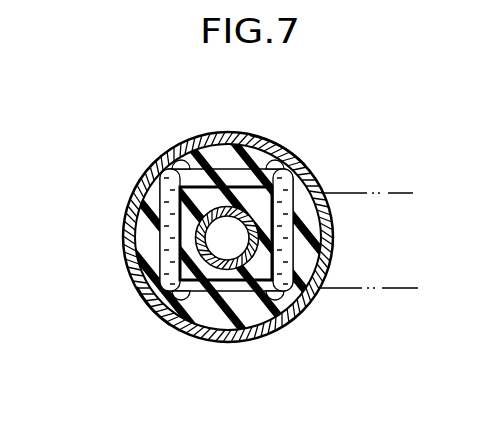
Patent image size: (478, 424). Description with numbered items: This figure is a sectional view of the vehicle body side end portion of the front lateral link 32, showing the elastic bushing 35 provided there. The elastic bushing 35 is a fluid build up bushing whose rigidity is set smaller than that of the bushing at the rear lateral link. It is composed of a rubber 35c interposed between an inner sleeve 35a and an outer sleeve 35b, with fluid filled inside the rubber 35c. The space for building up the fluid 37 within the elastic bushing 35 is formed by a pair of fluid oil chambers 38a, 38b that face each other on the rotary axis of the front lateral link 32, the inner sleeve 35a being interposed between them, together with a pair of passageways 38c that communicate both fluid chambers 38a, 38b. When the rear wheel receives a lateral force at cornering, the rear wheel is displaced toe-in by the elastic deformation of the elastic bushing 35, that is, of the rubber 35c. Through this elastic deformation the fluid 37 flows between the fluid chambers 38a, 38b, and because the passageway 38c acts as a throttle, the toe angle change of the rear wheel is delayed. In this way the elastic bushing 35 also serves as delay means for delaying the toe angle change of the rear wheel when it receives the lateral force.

The front lateral link 32 is at (388, 191).
The elastic bushing 35 is at (118, 107).
The inner sleeve 35a is at (137, 287).
The outer sleeve 35b is at (280, 145).
The rubber 35c is at (232, 160).
The fluid 37 is at (307, 288).
The fluid oil chamber 38a is at (178, 223).
The fluid oil chamber 38b is at (325, 230).
The passageway 38c is at (213, 162).